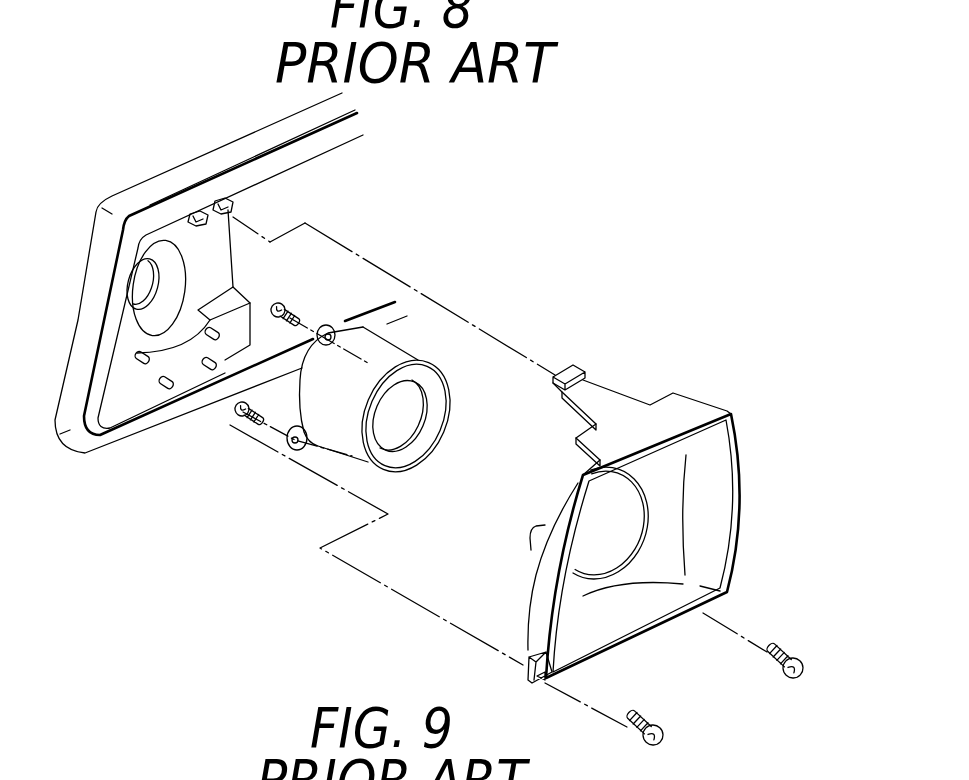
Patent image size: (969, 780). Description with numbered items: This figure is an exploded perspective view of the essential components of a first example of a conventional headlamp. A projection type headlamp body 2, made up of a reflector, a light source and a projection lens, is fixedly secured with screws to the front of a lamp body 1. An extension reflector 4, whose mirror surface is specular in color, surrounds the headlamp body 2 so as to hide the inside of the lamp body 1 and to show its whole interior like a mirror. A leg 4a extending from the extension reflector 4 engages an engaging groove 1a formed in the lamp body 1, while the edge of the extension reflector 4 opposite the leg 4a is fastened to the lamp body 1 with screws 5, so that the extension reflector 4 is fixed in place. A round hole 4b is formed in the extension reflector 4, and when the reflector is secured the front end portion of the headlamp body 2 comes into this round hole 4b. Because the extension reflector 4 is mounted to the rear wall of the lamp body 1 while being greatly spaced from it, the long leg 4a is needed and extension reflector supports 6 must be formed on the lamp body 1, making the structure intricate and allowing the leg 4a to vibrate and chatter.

The lamp body 1 is at (188, 152).
The engaging groove 1a is at (224, 202).
The projection type headlamp body 2 is at (441, 358).
The extension reflector 4 is at (683, 489).
The leg 4a is at (632, 415).
The round hole 4b is at (647, 507).
The screws 5 is at (663, 747).
The extension reflector supports 6 is at (212, 386).